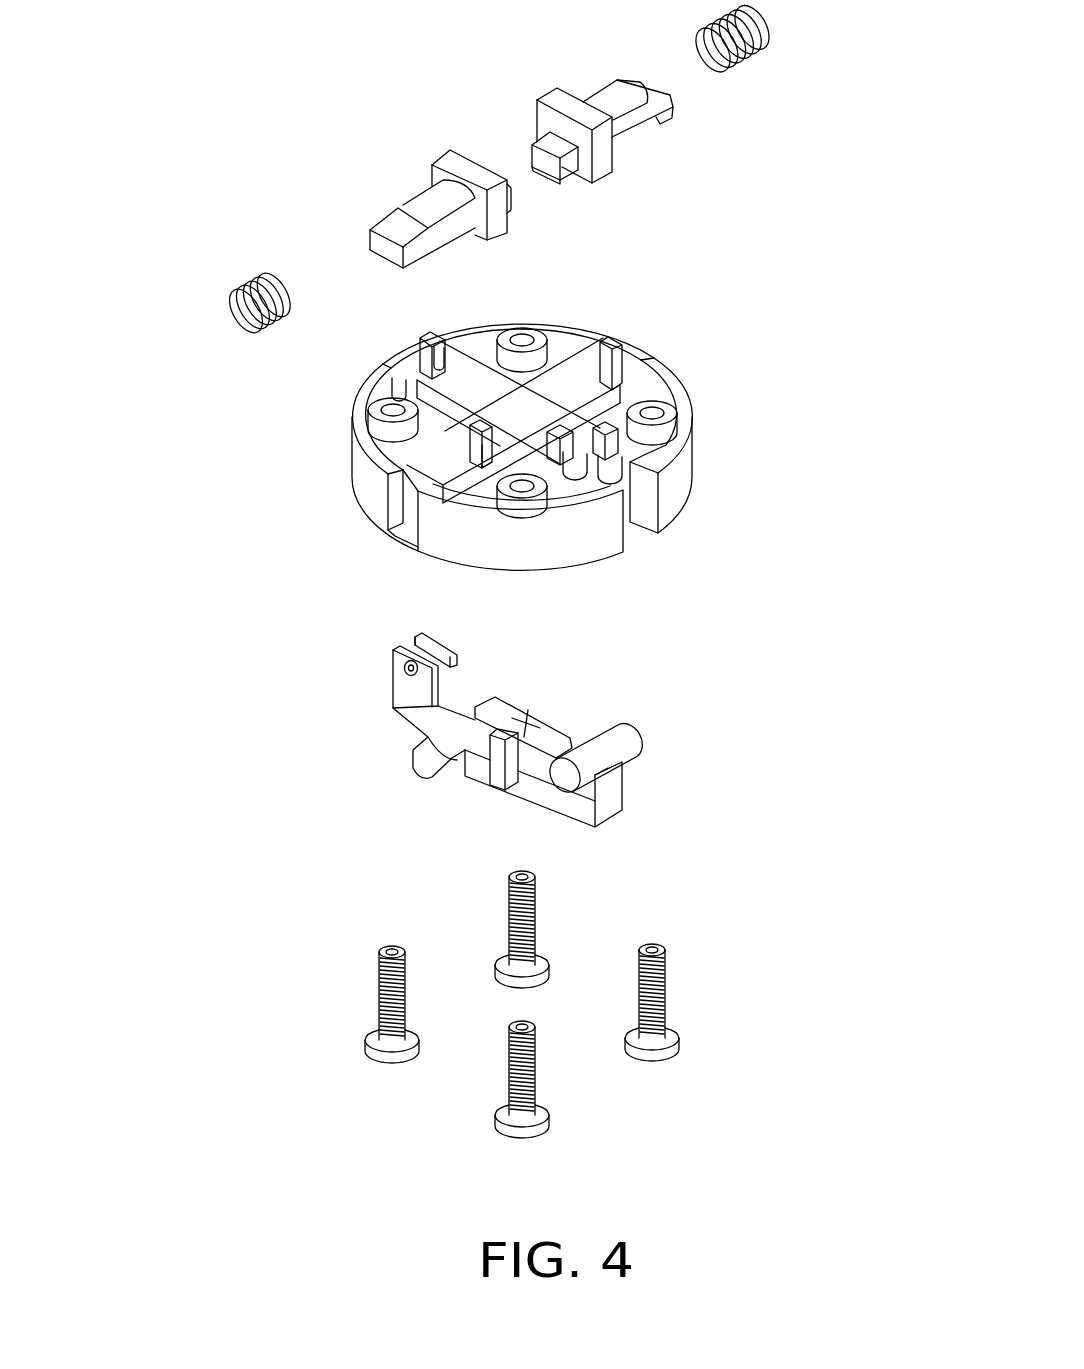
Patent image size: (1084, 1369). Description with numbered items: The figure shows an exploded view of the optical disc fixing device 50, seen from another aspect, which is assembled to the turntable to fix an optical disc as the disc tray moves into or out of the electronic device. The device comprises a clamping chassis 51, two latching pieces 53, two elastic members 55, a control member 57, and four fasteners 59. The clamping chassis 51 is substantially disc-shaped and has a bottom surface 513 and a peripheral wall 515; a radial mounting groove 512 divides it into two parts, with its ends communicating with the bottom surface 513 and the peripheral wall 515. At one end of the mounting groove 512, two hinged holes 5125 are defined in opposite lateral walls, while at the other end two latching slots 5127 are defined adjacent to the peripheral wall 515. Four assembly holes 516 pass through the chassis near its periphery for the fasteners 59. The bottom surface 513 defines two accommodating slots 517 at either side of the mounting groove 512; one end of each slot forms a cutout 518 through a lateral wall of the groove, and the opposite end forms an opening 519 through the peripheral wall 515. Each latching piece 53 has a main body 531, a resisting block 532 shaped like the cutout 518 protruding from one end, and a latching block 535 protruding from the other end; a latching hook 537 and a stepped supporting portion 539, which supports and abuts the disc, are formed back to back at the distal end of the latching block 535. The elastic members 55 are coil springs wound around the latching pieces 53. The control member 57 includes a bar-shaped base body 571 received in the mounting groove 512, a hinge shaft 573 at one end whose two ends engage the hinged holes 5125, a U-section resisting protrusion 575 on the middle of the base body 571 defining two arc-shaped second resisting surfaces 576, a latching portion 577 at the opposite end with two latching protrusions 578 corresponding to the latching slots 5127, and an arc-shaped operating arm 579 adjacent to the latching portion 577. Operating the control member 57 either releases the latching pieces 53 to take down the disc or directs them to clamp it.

The optical disc fixing device 50 is at (310, 86).
The clamping chassis 51 is at (690, 335).
The mounting groove 512 is at (642, 538).
The hinged holes 5125 is at (567, 490).
The latching slots 5127 is at (437, 340).
The bottom surface 513 is at (500, 403).
The peripheral wall 515 is at (668, 490).
The assembly holes 516 is at (527, 338).
The accommodating slots 517 is at (432, 460).
The cutout 518 is at (493, 453).
The opening 519 is at (400, 517).
The latching piece 53 is at (598, 186).
The main body 531 is at (565, 105).
The resisting block 532 is at (540, 153).
The latching block 535 is at (627, 130).
The latching hook 537 is at (668, 122).
The supporting portion 539 is at (637, 80).
The elastic member 55 is at (755, 65).
The control member 57 is at (388, 612).
The base body 571 is at (552, 795).
The hinge shaft 573 is at (612, 742).
The resisting protrusion 575 is at (500, 768).
The second resisting surfaces 576 is at (540, 715).
The latching portion 577 is at (420, 692).
The latching protrusions 578 is at (400, 673).
The operating arm 579 is at (430, 767).
The fasteners 59 is at (665, 1000).